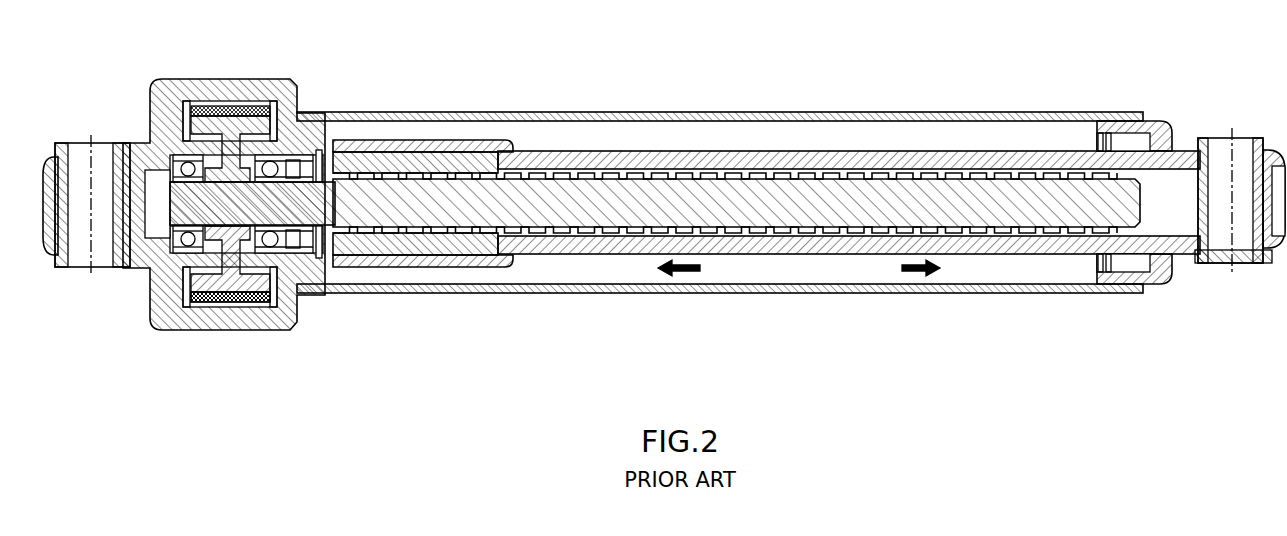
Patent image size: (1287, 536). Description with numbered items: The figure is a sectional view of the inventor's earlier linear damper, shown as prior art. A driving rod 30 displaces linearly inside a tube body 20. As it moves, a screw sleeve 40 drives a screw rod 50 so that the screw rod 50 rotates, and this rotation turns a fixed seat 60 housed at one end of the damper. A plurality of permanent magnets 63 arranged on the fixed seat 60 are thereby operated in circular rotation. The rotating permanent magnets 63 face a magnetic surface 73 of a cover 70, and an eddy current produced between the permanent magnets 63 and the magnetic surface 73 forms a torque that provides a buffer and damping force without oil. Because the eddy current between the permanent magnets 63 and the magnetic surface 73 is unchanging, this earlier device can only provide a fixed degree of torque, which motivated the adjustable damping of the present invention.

The tube body 20 is at (860, 289).
The driving rod 30 is at (876, 151).
The screw sleeve 40 is at (430, 245).
The screw rod 50 is at (607, 205).
The fixed seat 60 is at (217, 93).
The permanent magnets 63 is at (252, 107).
The cover 70 is at (163, 93).
The magnetic surface 73 is at (238, 308).